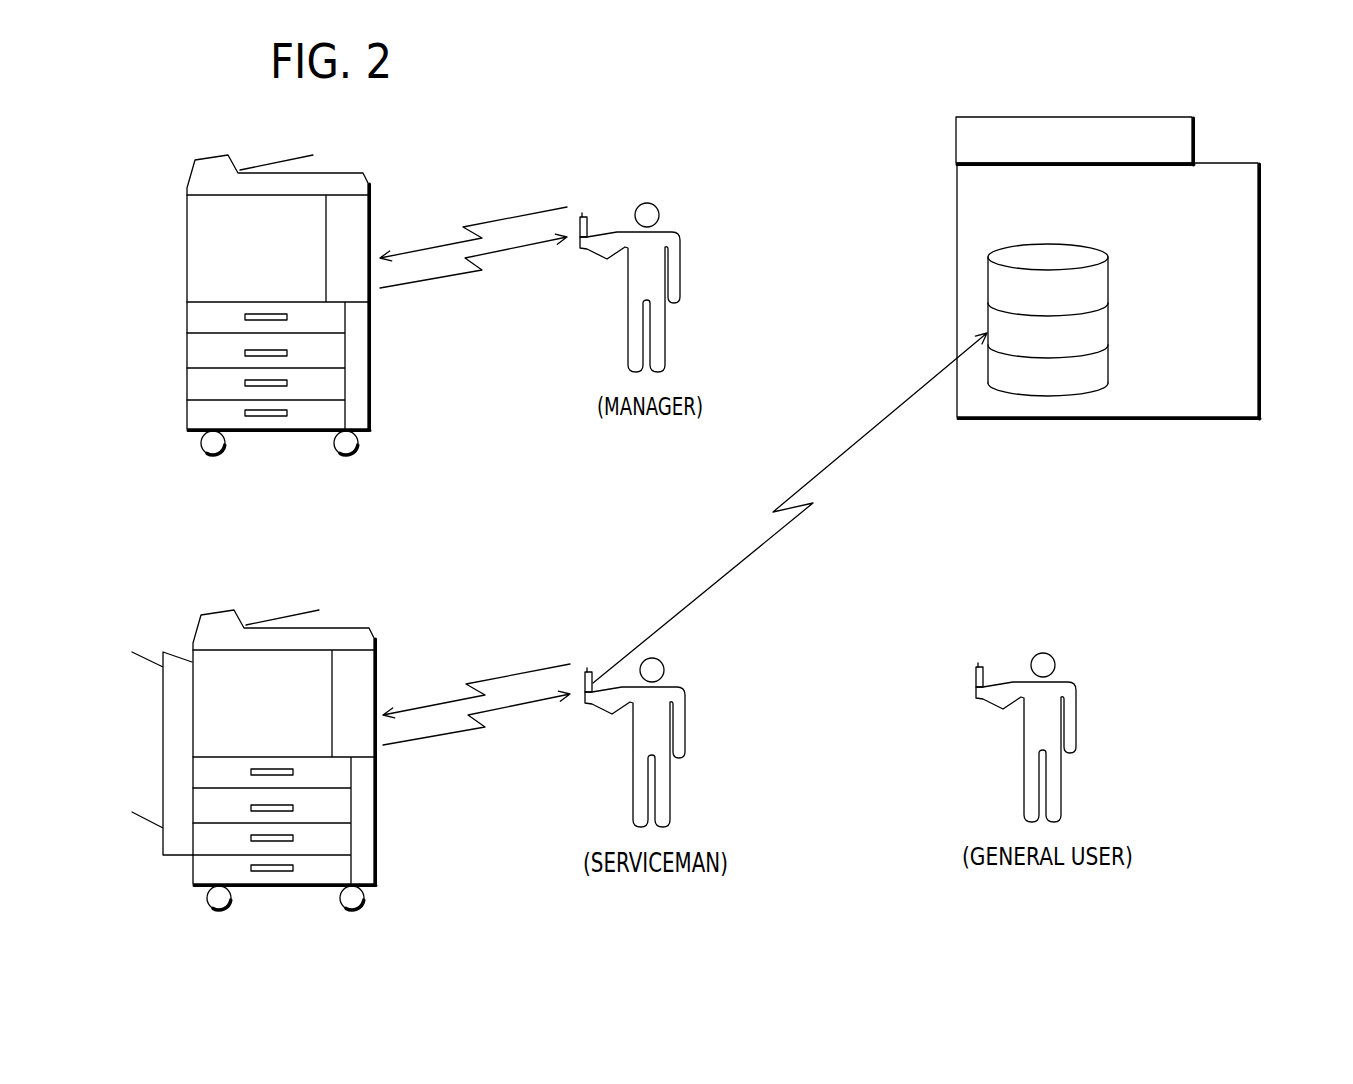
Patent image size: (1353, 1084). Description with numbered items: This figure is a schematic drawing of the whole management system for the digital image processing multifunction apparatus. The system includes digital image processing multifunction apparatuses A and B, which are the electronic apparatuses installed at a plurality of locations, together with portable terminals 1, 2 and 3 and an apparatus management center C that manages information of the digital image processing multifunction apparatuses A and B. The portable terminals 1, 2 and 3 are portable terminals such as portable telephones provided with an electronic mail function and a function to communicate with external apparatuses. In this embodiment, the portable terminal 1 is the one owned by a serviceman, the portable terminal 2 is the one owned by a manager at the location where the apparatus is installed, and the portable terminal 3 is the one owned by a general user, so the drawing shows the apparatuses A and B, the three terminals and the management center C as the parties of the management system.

The portable terminal 1 is at (588, 672).
The portable terminal 2 is at (585, 216).
The portable terminal 3 is at (985, 668).
The digital image processing multifunction apparatus A is at (168, 634).
The digital image processing multifunction apparatus B is at (162, 250).
The apparatus management center C is at (946, 146).